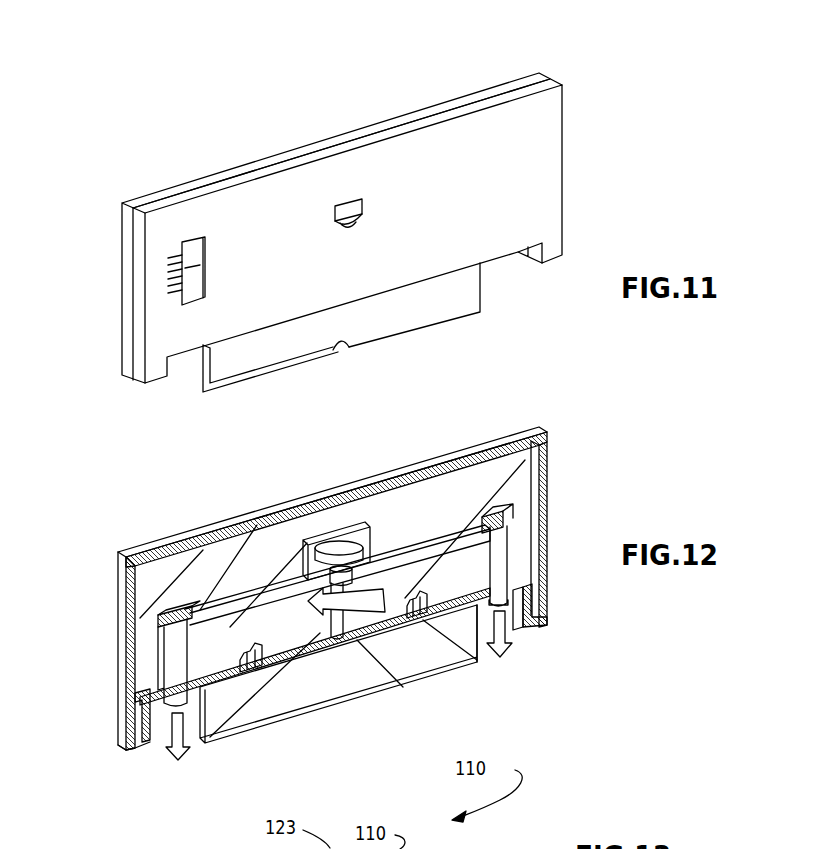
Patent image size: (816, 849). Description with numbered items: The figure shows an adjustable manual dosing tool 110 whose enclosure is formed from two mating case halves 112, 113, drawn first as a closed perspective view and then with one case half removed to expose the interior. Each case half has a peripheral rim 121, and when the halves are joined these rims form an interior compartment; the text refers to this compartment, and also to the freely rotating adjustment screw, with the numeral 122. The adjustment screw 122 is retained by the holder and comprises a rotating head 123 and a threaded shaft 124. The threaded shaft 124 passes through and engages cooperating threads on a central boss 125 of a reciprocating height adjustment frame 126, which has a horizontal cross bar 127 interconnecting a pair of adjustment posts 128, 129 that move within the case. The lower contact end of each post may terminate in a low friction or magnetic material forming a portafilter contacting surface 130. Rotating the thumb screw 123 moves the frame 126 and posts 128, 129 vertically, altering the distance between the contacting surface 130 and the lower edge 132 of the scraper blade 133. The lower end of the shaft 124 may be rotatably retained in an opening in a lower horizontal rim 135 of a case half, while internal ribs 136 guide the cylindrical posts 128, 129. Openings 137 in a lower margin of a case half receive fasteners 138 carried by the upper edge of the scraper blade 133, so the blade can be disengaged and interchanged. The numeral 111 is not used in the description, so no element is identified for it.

In FIG. 11, the adjustable manual dosing tool 110 is at (596, 146).
In FIG. 12, the adjustable manual dosing tool 110 is at (650, 395).
In FIG. 11, the connector region of panel 111 is at (157, 374).
In FIG. 11, the case half 112 is at (330, 157).
In FIG. 11, the case half 113 is at (348, 210).
In FIG. 12, the peripheral rim 121 is at (120, 609).
In FIG. 11, the adjustment screw 122 is at (350, 215).
In FIG. 12, the adjustment screw 122 is at (352, 543).
In FIG. 12, the rotating head 123 is at (420, 517).
In FIG. 12, the threaded shaft 124 is at (418, 663).
In FIG. 12, the central boss 125 is at (256, 667).
In FIG. 12, the height adjustment frame 126 is at (278, 565).
In FIG. 12, the horizontal cross bar 127 is at (126, 748).
In FIG. 12, the adjustment post 128 is at (140, 658).
In FIG. 12, the adjustment post 129 is at (517, 550).
In FIG. 12, the portafilter contacting surface 130 is at (508, 642).
In FIG. 11, the lower edge 132 is at (370, 349).
In FIG. 12, the lower edge 132 is at (440, 680).
In FIG. 11, the scraper blade 133 is at (415, 305).
In FIG. 12, the scraper blade 133 is at (443, 717).
In FIG. 12, the lower horizontal rim 135 is at (335, 697).
In FIG. 12, the internal ribs 136 is at (175, 580).
In FIG. 12, the openings 137 is at (278, 600).
In FIG. 12, the fasteners 138 is at (198, 735).